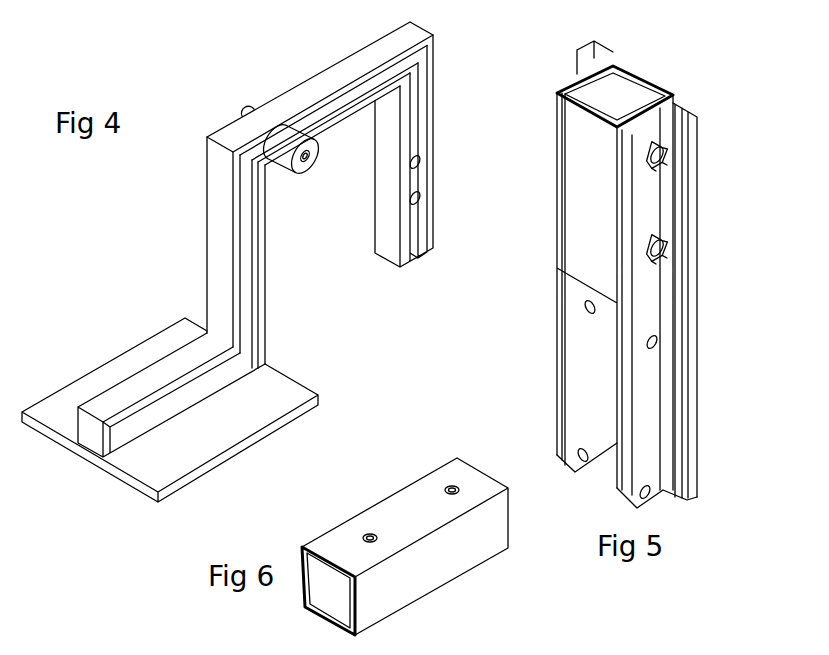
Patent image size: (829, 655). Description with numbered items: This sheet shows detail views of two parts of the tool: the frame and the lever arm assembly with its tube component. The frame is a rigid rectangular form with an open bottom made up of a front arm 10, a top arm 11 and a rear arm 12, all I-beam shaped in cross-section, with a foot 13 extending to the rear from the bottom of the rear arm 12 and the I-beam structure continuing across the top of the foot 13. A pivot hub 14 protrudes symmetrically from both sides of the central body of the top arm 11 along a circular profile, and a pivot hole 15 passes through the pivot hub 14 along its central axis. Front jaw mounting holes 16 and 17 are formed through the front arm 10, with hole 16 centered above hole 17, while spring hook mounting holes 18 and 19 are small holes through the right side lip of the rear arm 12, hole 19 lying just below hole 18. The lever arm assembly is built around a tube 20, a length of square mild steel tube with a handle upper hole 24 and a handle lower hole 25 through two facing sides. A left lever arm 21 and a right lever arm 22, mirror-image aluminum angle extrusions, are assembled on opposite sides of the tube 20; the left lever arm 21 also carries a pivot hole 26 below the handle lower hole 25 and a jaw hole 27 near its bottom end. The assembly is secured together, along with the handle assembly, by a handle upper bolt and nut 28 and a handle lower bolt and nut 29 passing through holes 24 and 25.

In FIG. 4, the front arm 10 is at (437, 142).
In FIG. 4, the top arm 11 is at (303, 77).
In FIG. 4, the rear arm 12 is at (205, 227).
In FIG. 4, the foot 13 is at (81, 371).
In FIG. 4, the pivot hub 14 is at (306, 176).
In FIG. 4, the pivot hole 15 is at (310, 159).
In FIG. 4, the front jaw mounting hole 16 is at (424, 166).
In FIG. 4, the front jaw mounting hole 17 is at (424, 202).
In FIG. 4, the spring hook mounting hole 18 is at (254, 266).
In FIG. 4, the spring hook mounting hole 19 is at (257, 280).
In FIG. 5, the tube 20 is at (647, 78).
In FIG. 6, the tube 20 is at (434, 596).
In FIG. 5, the left lever arm 21 is at (690, 101).
In FIG. 5, the right lever arm 22 is at (601, 52).
In FIG. 6, the handle upper hole 24 is at (446, 486).
In FIG. 6, the handle lower hole 25 is at (363, 534).
In FIG. 5, the pivot hole 26 is at (661, 341).
In FIG. 5, the jaw hole 27 is at (655, 489).
In FIG. 5, the handle upper bolt and nut 28 is at (670, 157).
In FIG. 5, the handle lower bolt and nut 29 is at (668, 250).